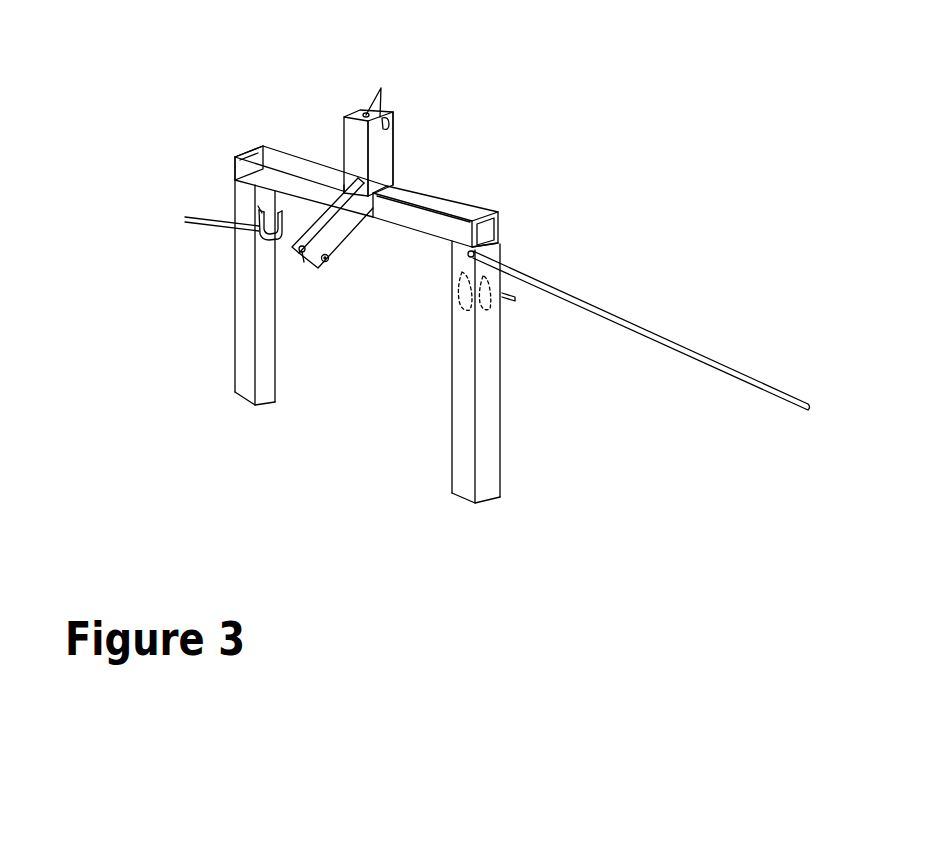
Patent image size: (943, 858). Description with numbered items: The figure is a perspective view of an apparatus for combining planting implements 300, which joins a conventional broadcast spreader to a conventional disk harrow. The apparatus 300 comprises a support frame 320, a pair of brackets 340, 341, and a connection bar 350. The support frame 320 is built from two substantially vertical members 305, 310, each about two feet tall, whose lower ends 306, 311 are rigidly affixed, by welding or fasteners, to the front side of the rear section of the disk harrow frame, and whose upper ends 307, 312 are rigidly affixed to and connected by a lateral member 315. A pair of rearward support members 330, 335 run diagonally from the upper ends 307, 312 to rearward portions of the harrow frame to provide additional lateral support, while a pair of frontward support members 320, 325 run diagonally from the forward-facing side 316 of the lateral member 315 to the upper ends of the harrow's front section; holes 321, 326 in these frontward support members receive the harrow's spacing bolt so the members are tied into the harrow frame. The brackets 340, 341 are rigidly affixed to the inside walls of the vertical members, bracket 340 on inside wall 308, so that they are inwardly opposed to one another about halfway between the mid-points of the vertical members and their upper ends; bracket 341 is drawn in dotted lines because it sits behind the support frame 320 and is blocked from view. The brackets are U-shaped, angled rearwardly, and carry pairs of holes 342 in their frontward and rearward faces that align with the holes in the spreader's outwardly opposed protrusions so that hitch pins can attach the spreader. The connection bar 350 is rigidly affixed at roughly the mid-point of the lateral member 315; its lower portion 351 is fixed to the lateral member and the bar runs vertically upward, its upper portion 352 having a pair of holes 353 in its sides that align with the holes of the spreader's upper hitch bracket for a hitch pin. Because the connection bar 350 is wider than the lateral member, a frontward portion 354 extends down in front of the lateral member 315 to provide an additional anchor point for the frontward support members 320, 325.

The apparatus for combining planting implements 300 is at (420, 374).
The substantially vertical member 305 is at (237, 305).
The lower end 306 is at (247, 399).
The upper end 307 is at (235, 163).
The inside wall 308 is at (267, 268).
The substantially vertical member 310 is at (485, 358).
The lower end 311 is at (492, 498).
The upper end 312 is at (477, 248).
The lateral member 315 is at (455, 212).
The forward-facing side 316 is at (450, 233).
The support frame 320 is at (258, 178).
The hole 321 is at (304, 255).
The frontward support member 325 is at (338, 240).
The hole 326 is at (327, 260).
The rearward support member 330 is at (262, 208).
The rearward support member 335 is at (665, 347).
The bracket 340 is at (260, 223).
The bracket 341 is at (487, 305).
The pair of holes 342 is at (262, 213).
The connection bar 350 is at (344, 143).
The lower portion 351 is at (375, 181).
The upper portion 352 is at (382, 138).
The pair of holes 353 is at (381, 88).
The frontward portion 354 is at (357, 198).